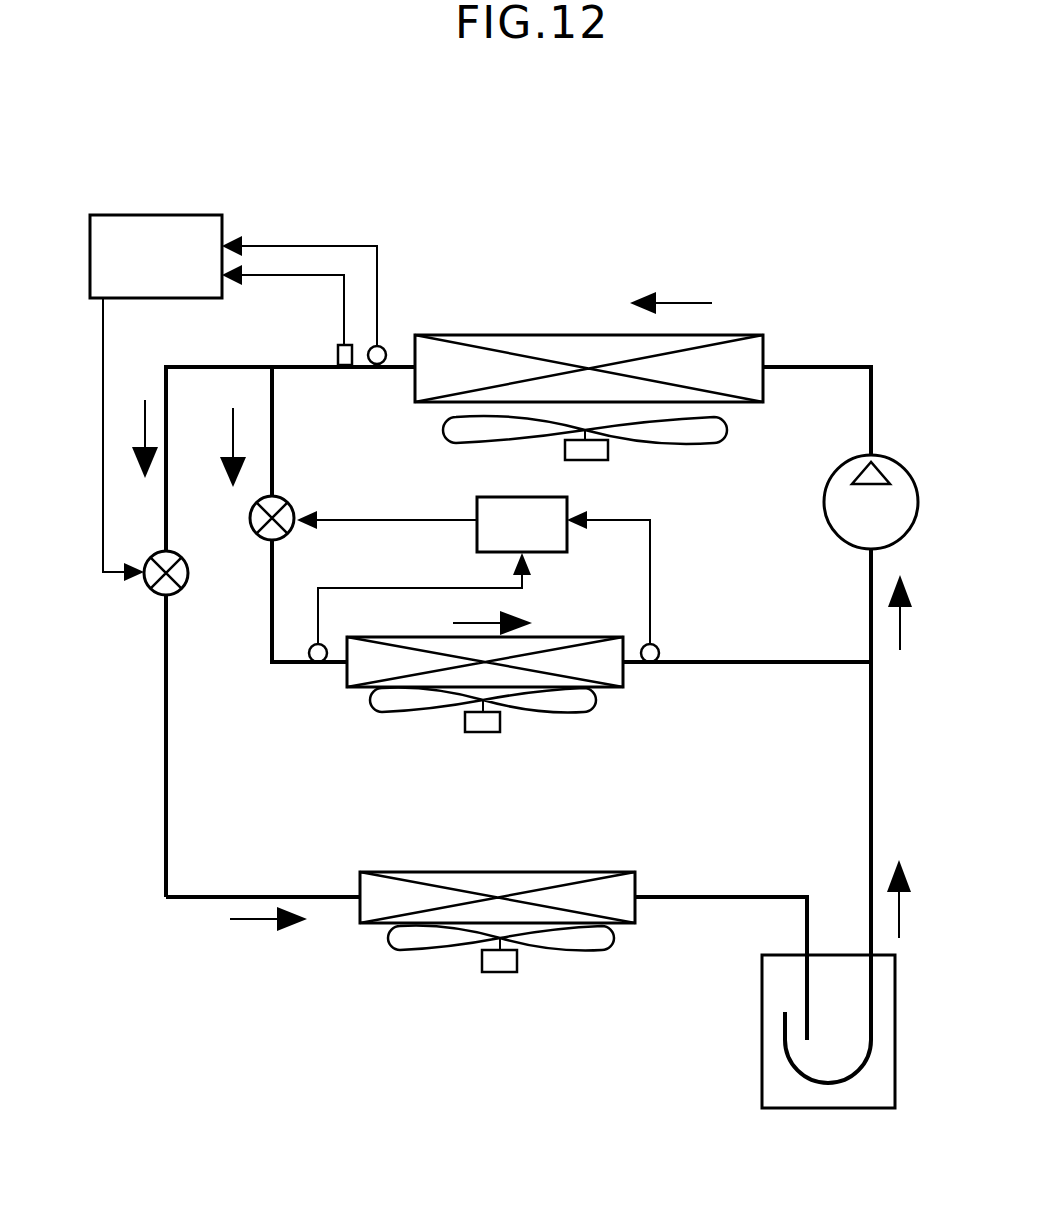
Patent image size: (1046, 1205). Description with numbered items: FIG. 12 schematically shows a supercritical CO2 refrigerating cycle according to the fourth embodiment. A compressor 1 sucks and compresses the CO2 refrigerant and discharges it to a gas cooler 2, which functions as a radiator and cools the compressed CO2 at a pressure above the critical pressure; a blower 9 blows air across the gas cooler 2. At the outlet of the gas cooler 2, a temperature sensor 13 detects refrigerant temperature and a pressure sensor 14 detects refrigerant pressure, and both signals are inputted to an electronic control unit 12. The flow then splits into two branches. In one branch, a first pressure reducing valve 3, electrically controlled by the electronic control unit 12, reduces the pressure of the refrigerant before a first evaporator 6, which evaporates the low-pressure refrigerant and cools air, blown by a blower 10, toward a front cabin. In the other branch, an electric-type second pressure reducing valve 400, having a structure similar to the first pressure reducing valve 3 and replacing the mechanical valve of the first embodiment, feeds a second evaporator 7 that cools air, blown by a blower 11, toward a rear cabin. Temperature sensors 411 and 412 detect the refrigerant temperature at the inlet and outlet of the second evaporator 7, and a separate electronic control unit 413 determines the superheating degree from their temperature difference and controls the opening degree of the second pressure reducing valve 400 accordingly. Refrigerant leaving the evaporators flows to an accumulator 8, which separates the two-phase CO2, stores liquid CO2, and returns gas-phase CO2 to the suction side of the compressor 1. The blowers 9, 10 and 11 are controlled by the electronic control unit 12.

The compressor 1 is at (908, 507).
The gas cooler 2 is at (550, 343).
The first pressure reducing valve 3 is at (178, 588).
The first evaporator 6 is at (370, 912).
The second evaporator 7 is at (605, 677).
The accumulator 8 is at (843, 1087).
The blower 9 is at (608, 452).
The blower 10 is at (512, 963).
The blower 11 is at (465, 725).
The electronic control unit 12 is at (160, 215).
The temperature sensor 13 is at (383, 352).
The pressure sensor 14 is at (340, 348).
The second pressure reducing valve 400 is at (290, 505).
The temperature sensor 411 is at (320, 668).
The temperature sensor 412 is at (658, 650).
The electronic control unit 413 is at (520, 497).